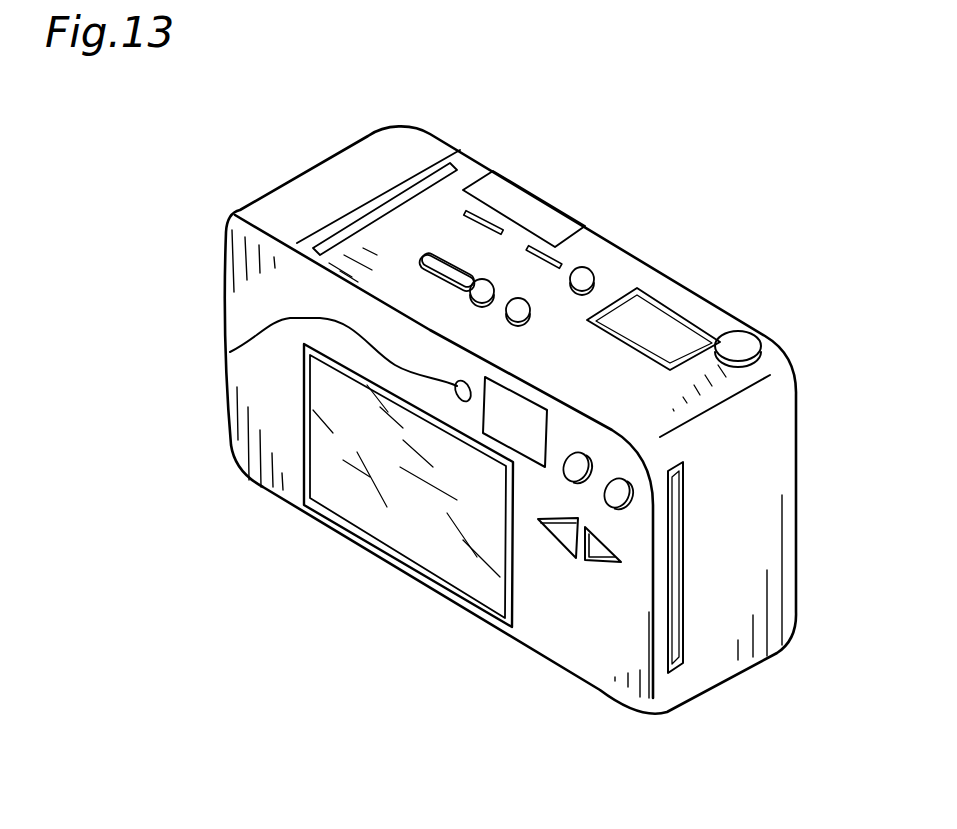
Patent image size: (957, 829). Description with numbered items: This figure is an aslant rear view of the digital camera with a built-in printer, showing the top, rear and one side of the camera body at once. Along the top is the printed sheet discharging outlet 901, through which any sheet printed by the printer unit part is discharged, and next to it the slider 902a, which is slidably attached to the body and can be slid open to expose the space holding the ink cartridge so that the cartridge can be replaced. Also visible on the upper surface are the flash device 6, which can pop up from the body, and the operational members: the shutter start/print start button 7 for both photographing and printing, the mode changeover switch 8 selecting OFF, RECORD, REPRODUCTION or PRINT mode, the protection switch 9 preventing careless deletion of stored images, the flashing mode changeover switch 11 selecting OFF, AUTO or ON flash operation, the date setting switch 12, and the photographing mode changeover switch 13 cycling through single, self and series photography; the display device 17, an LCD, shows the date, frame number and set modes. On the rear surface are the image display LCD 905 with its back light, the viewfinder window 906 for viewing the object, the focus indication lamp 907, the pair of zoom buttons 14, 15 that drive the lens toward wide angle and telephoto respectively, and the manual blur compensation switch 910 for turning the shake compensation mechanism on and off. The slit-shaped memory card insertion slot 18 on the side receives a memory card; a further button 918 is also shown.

The flash device 6 is at (530, 203).
The shutter start/print start button 7 is at (745, 340).
The mode changeover switch 8 is at (473, 291).
The protection switch 9 is at (507, 307).
The flashing mode changeover switch 11 is at (592, 272).
The date setting switch 12 is at (549, 256).
The photographing mode changeover switch 13 is at (466, 215).
The zoom button 14 is at (560, 542).
The zoom button 15 is at (600, 560).
The display device 17 is at (677, 323).
The memory card insertion slot 18 is at (688, 549).
The printed sheet discharging outlet 901 is at (420, 182).
The slider 902a is at (287, 196).
The image display LCD 905 is at (400, 524).
The viewfinder window 906 is at (518, 412).
The focus indication lamp 907 is at (232, 351).
The manual blur compensation switch 910 is at (583, 457).
The operation button 918 is at (632, 482).